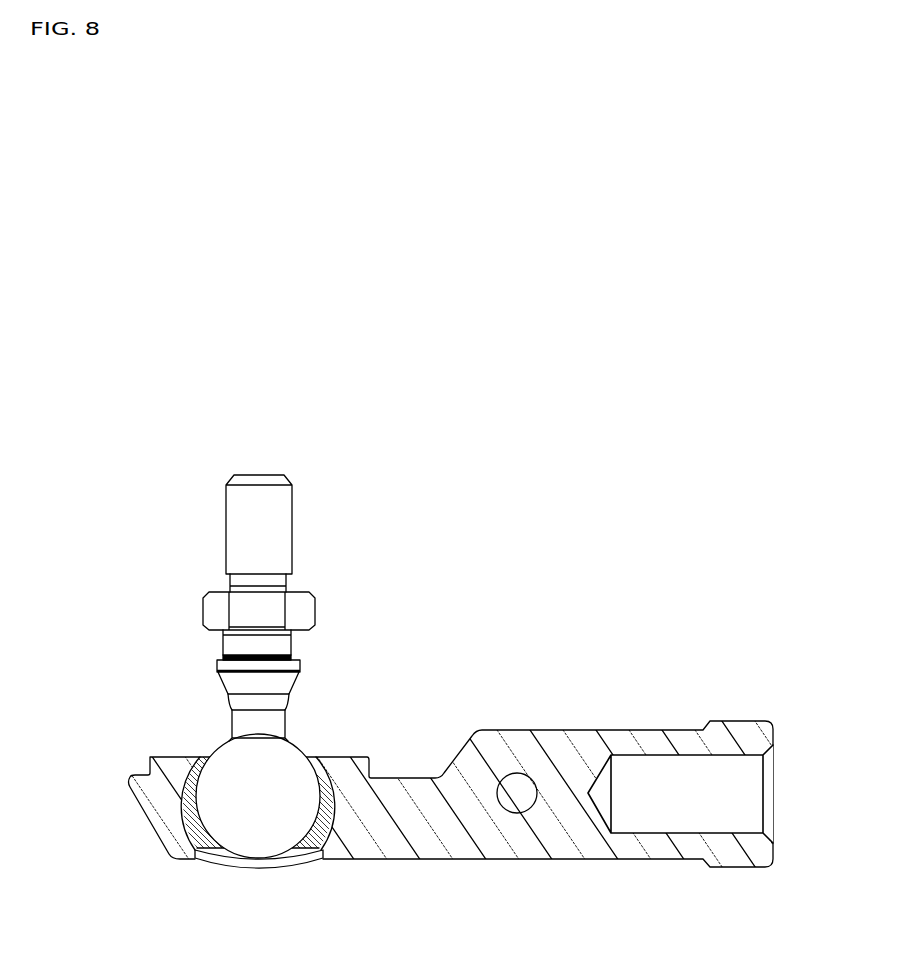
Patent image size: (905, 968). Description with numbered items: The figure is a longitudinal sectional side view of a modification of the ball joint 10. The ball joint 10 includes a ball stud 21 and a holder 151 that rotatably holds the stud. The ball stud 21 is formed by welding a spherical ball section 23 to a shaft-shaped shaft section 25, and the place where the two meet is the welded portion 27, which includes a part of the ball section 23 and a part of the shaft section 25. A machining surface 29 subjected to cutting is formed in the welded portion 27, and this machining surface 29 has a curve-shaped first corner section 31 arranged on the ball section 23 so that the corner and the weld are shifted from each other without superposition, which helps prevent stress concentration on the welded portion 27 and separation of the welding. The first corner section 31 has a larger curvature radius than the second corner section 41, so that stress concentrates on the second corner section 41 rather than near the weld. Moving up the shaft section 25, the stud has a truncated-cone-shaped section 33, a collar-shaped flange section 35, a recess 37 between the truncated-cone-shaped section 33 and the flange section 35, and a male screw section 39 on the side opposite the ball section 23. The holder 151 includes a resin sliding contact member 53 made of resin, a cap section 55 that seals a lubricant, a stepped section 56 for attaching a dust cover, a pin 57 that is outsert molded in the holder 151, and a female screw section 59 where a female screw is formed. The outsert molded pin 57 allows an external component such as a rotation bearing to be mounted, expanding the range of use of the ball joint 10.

The ball joint 10 is at (707, 457).
The ball stud 21 is at (310, 482).
The ball section 23 is at (220, 753).
The shaft section 25 is at (230, 585).
The welded portion 27 is at (314, 743).
The machining surface 29 is at (228, 734).
The first corner section 31 is at (287, 740).
The truncated-cone-shaped section 33 is at (287, 680).
The flange section 35 is at (303, 603).
The recess 37 is at (222, 648).
The male screw section 39 is at (232, 478).
The second corner section 41 is at (293, 658).
The resin sliding contact member 53 is at (198, 850).
The cap section 55 is at (258, 870).
The stepped section 56 is at (150, 768).
The pin 57 is at (518, 800).
The female screw section 59 is at (735, 757).
The holder 151 is at (714, 708).